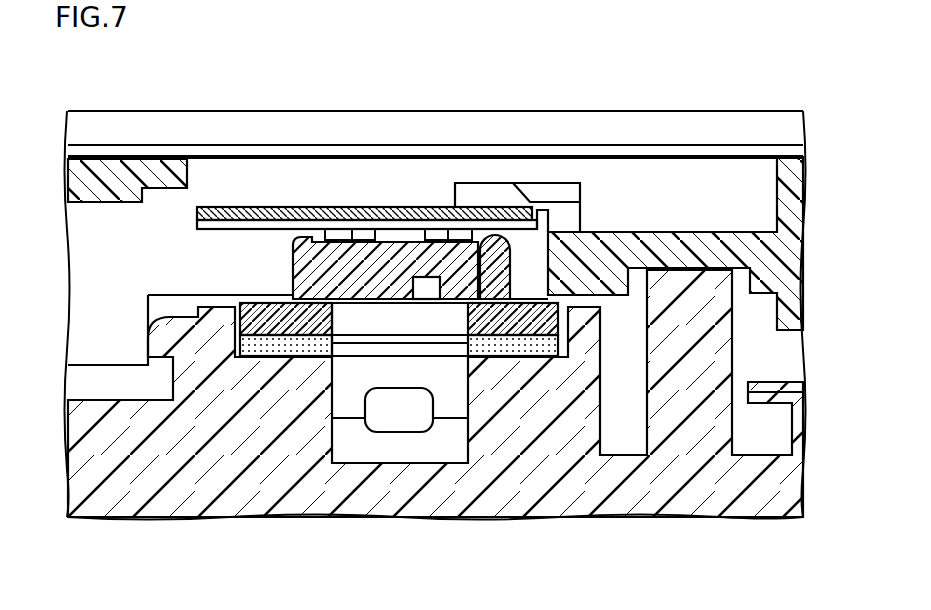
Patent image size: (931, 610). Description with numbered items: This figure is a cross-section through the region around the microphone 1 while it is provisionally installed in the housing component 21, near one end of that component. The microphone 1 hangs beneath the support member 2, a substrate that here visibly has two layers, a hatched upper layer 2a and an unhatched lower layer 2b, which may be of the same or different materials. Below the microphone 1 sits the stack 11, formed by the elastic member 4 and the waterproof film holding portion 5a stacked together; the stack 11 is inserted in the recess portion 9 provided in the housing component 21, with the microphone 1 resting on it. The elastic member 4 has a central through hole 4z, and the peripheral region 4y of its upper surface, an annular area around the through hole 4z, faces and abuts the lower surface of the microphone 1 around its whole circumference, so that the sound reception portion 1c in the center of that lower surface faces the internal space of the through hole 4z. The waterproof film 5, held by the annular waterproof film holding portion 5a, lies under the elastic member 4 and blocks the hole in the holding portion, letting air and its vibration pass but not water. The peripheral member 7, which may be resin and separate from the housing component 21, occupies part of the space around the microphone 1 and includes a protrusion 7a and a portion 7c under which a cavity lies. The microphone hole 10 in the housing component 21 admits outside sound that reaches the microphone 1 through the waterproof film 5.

The microphone 1 is at (420, 315).
The sound reception portion 1c is at (402, 303).
The support member 2 is at (367, 131).
The upper layer 2a is at (288, 217).
The lower layer 2b is at (327, 226).
The elastic member 4 is at (268, 318).
The peripheral region 4y is at (480, 300).
The through hole 4z is at (333, 316).
The waterproof film 5 is at (349, 347).
The waterproof film holding portion 5a is at (300, 345).
The peripheral member 7 is at (670, 253).
The protrusion 7a is at (560, 193).
The portion under which a cavity is located 7c is at (165, 173).
The recess portion 9 is at (236, 308).
The microphone hole 10 is at (402, 432).
The stack 11 is at (399, 448).
The housing component 21 is at (536, 413).